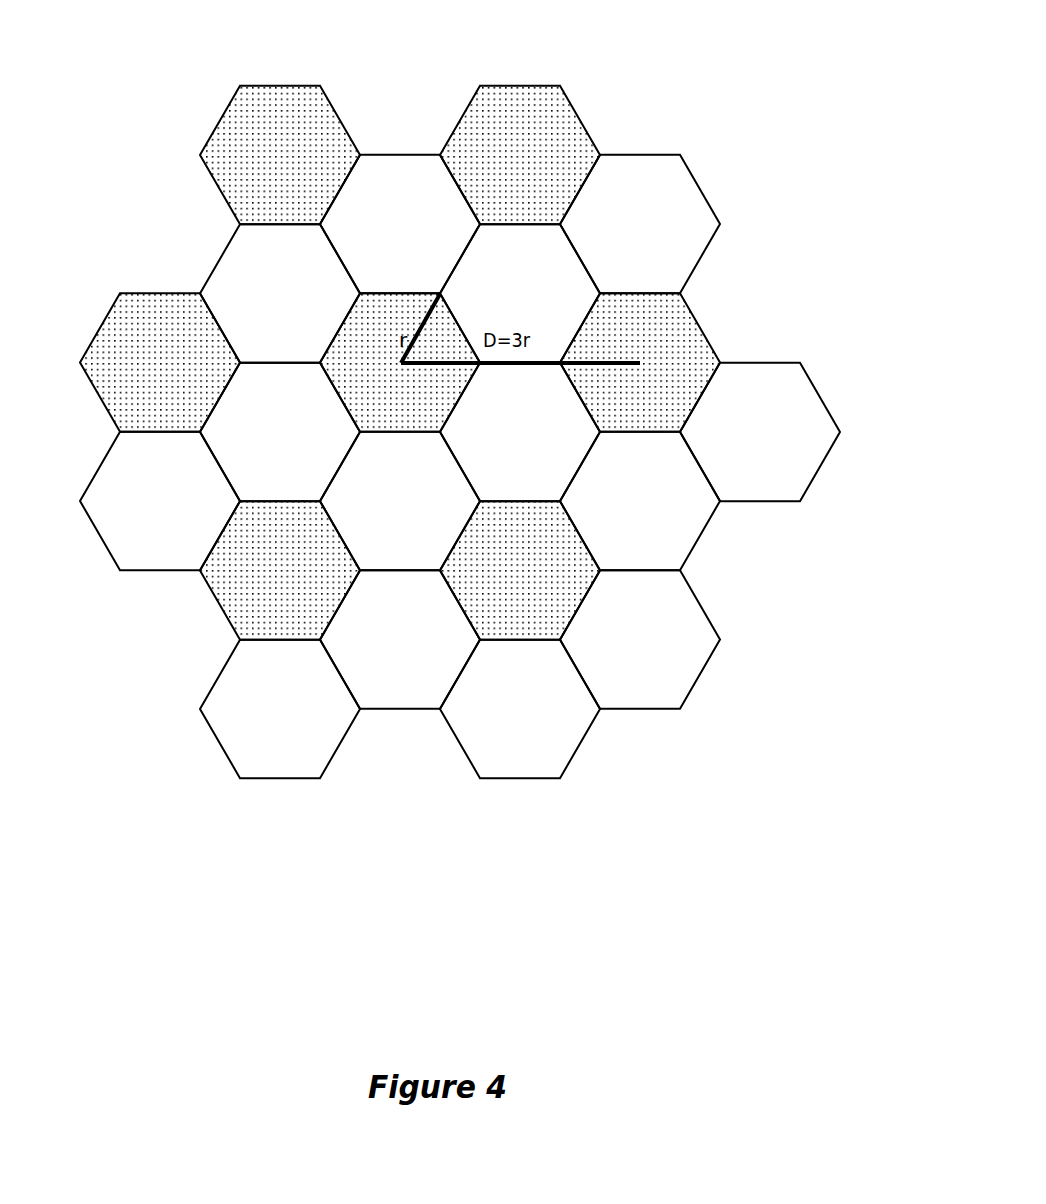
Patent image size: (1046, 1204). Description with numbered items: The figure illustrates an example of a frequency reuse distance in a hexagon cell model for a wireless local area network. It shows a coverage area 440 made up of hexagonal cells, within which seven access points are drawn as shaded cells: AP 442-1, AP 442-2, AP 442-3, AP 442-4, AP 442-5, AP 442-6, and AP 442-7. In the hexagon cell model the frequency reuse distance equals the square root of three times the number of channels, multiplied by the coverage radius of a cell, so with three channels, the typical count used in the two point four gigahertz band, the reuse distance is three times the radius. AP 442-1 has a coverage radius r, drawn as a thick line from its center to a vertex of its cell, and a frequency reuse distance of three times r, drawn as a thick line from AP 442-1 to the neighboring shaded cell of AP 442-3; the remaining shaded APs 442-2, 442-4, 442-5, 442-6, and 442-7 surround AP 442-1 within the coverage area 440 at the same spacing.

The coverage area 440 is at (697, 52).
The AP 442-1 is at (360, 330).
The AP 442-2 is at (490, 112).
The AP 442-3 is at (690, 343).
The AP 442-4 is at (482, 533).
The AP 442-5 is at (240, 608).
The AP 442-6 is at (123, 320).
The AP 442-7 is at (240, 120).